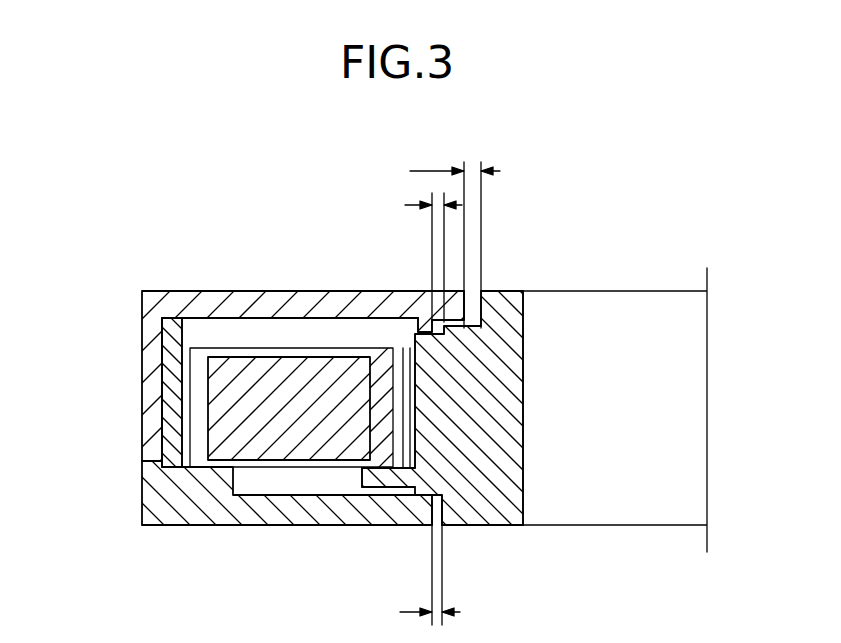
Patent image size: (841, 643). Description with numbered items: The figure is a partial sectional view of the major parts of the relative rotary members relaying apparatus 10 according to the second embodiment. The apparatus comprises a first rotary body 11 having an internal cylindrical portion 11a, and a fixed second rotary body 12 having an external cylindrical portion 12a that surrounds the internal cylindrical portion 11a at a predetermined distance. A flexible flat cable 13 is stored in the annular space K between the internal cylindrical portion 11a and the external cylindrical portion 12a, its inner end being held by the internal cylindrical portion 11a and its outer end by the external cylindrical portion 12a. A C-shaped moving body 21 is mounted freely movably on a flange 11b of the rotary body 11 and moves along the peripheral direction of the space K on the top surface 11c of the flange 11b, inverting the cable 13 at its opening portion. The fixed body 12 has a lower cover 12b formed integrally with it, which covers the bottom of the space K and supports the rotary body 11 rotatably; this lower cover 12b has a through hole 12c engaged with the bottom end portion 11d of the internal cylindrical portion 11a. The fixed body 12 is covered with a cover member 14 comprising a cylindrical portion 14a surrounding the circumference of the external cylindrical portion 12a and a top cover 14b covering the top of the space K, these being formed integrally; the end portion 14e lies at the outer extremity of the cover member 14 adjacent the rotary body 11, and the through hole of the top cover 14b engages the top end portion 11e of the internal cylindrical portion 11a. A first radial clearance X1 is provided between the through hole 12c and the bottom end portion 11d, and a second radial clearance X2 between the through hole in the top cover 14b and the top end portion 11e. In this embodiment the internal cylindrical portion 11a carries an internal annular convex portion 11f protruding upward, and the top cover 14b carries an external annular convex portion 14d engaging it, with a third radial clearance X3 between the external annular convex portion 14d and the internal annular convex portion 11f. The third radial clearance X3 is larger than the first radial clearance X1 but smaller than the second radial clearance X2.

The relative rotary members relaying apparatus 10 is at (636, 213).
The first rotary body 11 is at (520, 290).
The internal cylindrical portion 11a is at (525, 340).
The flange 11b is at (350, 477).
The top surface of the flange 11c is at (377, 458).
The bottom end portion 11d is at (440, 497).
The top end portion 11e is at (447, 325).
The internal annular convex portion 11f is at (485, 365).
The second rotary body 12 is at (140, 494).
The external cylindrical portion 12a is at (172, 370).
The lower cover 12b is at (350, 527).
The through hole 12c is at (436, 510).
The flexible flat cable 13 is at (192, 412).
The cover member 14 is at (165, 287).
The cylindrical portion 14a is at (162, 331).
The top cover 14b is at (288, 300).
The external annular convex portion 14d is at (428, 320).
The cover end face 14e is at (490, 289).
The moving body 21 is at (370, 398).
The annular space K is at (233, 338).
The first radial clearance X1 is at (449, 563).
The second radial clearance X2 is at (455, 234).
The third radial clearance X3 is at (419, 249).